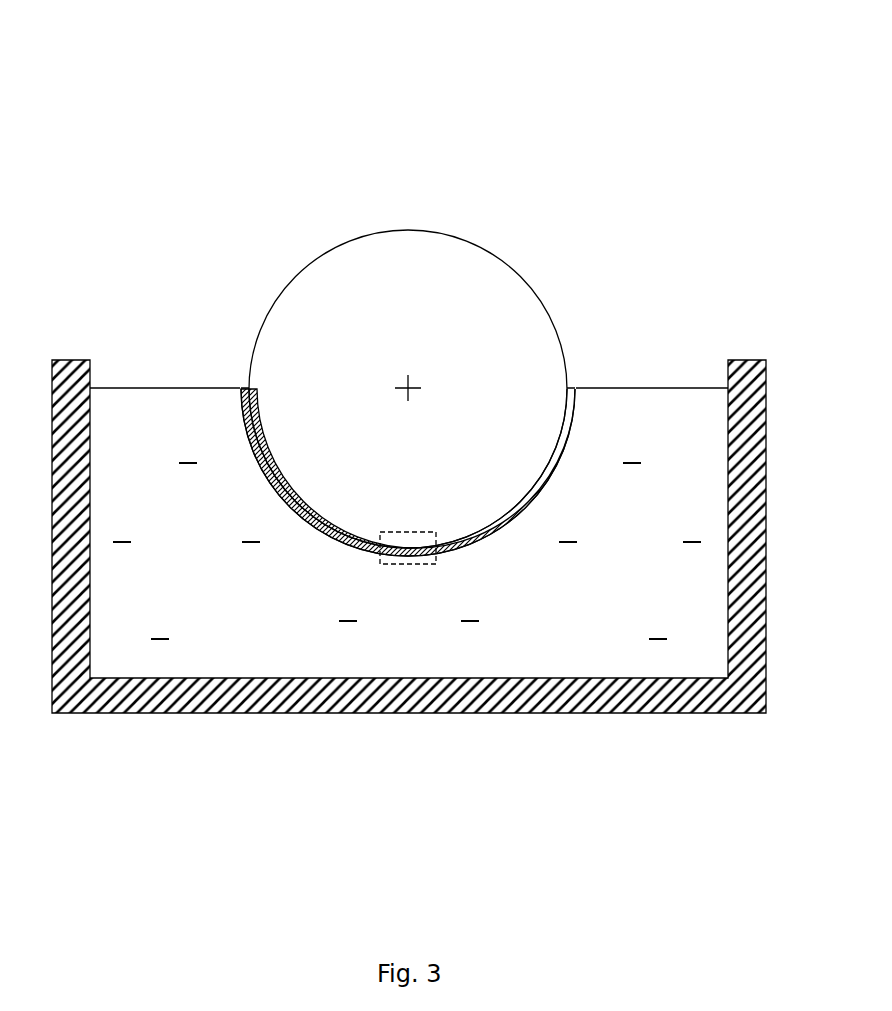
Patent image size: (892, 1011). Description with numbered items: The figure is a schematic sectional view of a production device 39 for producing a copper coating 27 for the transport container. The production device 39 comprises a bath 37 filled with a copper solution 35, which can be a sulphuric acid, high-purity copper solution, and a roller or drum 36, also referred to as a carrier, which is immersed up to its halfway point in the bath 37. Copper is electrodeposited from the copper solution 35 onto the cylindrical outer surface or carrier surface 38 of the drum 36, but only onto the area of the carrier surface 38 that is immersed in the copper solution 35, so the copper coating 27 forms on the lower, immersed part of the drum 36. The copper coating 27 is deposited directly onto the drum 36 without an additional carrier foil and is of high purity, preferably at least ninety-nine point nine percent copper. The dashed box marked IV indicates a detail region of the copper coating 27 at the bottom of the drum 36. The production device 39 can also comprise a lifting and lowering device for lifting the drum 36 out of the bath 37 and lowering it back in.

The copper coating 27 is at (510, 513).
The copper solution 35 is at (216, 612).
The drum 36 is at (509, 267).
The bath 37 is at (766, 492).
The carrier surface 38 is at (278, 292).
The production device 39 is at (393, 110).
The detail region IV is at (391, 564).